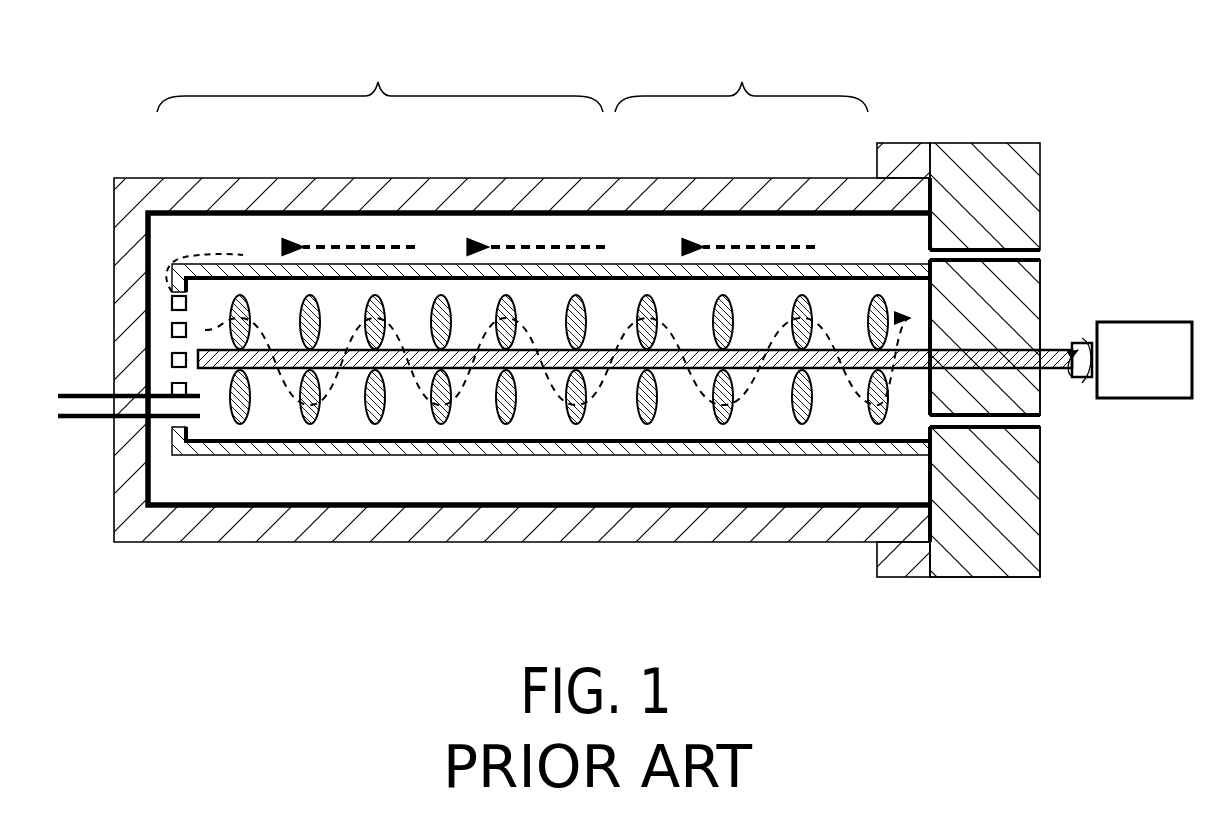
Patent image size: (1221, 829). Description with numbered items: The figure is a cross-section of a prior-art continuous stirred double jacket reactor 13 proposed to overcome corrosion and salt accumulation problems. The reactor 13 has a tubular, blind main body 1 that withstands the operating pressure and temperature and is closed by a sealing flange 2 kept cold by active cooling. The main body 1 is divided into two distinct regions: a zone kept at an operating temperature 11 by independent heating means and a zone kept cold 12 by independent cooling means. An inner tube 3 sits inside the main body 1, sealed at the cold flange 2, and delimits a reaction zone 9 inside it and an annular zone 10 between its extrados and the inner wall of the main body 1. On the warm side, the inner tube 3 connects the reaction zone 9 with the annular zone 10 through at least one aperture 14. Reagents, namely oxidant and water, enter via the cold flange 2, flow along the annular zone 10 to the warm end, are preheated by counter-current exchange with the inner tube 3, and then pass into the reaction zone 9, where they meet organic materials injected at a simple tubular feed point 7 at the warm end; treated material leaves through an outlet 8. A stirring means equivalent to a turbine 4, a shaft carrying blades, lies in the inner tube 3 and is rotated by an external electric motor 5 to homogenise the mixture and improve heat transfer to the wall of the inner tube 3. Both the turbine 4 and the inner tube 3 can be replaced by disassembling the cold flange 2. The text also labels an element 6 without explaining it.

The main body 1 is at (758, 520).
The sealing flange 2 is at (1020, 532).
The inner tube 3 is at (480, 456).
The turbine 4 is at (686, 372).
The external electric motor 5 is at (1150, 320).
The bearing block 6 is at (1046, 253).
The tubular feed point 7 is at (88, 424).
The outlet 8 is at (1046, 424).
The reaction zone 9 is at (286, 406).
The annular zone 10 is at (356, 476).
The zone kept at an operating temperature 11 is at (380, 81).
The zone kept cold 12 is at (741, 81).
The reactor 13 is at (1015, 108).
The aperture 14 is at (178, 345).